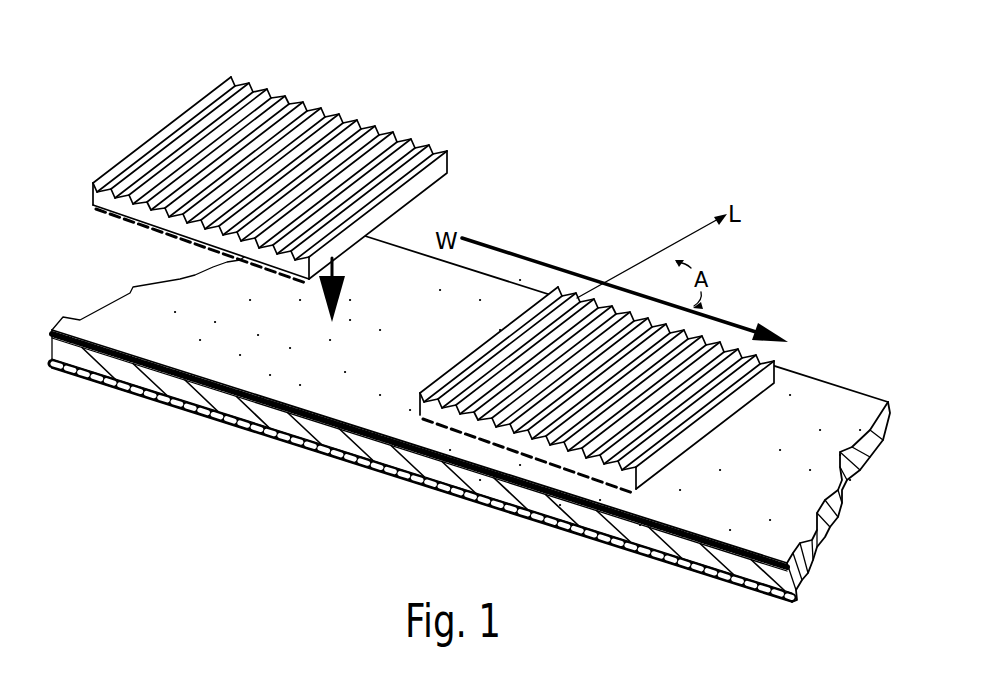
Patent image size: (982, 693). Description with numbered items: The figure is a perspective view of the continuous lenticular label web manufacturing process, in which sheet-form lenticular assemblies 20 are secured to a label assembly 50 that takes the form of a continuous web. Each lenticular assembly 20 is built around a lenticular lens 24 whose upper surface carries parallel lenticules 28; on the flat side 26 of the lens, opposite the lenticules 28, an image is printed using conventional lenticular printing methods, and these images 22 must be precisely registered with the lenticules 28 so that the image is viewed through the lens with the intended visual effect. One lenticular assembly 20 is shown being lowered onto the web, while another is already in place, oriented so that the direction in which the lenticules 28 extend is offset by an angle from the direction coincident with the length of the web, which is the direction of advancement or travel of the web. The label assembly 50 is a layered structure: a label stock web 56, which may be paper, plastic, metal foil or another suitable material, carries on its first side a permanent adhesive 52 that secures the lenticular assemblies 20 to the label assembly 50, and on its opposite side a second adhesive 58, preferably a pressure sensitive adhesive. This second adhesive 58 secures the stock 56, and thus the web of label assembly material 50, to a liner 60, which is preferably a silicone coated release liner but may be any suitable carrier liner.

The lenticular assembly 20 is at (414, 122).
The images 22 is at (97, 212).
The lenticular lens 24 is at (452, 162).
The flat side 26 is at (181, 247).
The lenticules 28 is at (258, 92).
The label assembly 50 is at (857, 372).
The permanent adhesive 52 is at (110, 320).
The label stock web 56 is at (127, 374).
The second adhesive 58 is at (52, 363).
The liner 60 is at (140, 396).